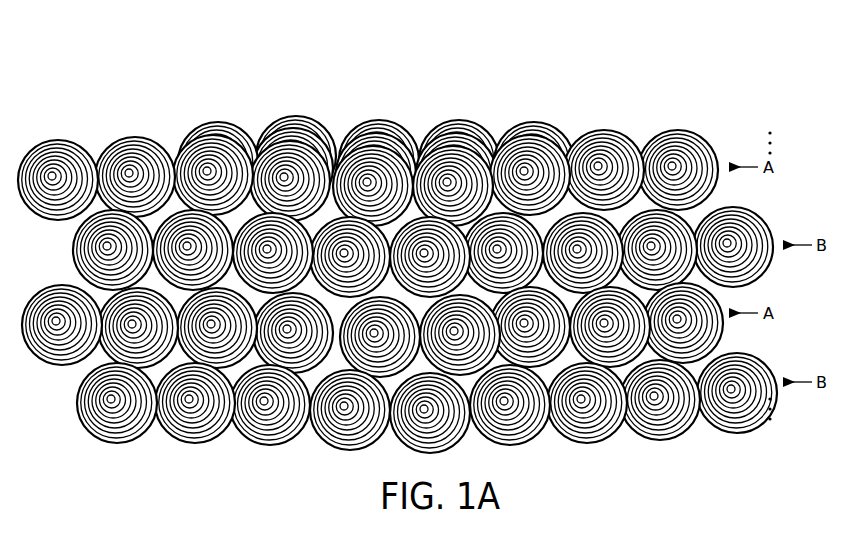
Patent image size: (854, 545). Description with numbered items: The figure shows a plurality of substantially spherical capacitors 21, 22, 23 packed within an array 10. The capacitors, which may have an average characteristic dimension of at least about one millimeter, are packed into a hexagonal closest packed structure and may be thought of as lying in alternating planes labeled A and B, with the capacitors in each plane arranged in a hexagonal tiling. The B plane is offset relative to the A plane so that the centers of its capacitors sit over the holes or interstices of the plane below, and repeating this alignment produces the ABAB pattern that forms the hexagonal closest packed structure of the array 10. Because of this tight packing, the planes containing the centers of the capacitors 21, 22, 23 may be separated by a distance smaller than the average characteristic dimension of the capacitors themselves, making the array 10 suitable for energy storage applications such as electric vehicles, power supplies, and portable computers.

The array 10 is at (397, 250).
The spherical capacitor 21 is at (378, 172).
The spherical capacitor 22 is at (453, 172).
The spherical capacitor 23 is at (532, 172).